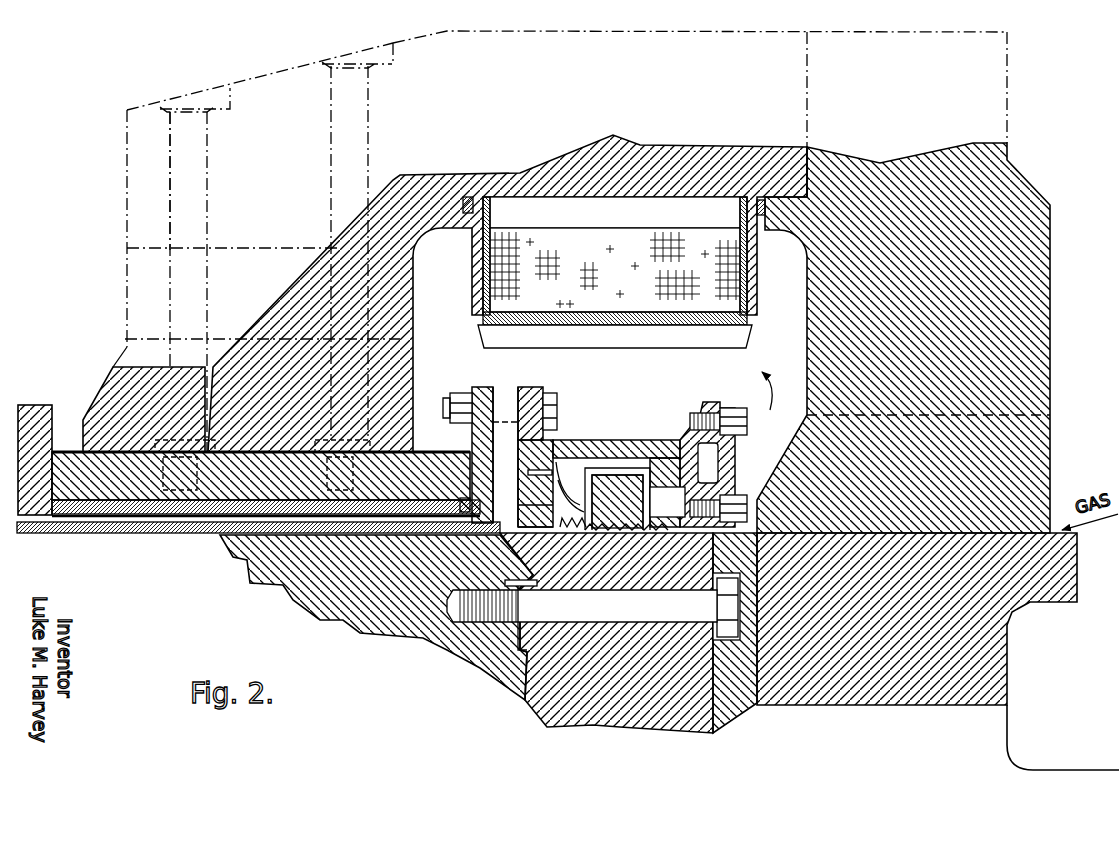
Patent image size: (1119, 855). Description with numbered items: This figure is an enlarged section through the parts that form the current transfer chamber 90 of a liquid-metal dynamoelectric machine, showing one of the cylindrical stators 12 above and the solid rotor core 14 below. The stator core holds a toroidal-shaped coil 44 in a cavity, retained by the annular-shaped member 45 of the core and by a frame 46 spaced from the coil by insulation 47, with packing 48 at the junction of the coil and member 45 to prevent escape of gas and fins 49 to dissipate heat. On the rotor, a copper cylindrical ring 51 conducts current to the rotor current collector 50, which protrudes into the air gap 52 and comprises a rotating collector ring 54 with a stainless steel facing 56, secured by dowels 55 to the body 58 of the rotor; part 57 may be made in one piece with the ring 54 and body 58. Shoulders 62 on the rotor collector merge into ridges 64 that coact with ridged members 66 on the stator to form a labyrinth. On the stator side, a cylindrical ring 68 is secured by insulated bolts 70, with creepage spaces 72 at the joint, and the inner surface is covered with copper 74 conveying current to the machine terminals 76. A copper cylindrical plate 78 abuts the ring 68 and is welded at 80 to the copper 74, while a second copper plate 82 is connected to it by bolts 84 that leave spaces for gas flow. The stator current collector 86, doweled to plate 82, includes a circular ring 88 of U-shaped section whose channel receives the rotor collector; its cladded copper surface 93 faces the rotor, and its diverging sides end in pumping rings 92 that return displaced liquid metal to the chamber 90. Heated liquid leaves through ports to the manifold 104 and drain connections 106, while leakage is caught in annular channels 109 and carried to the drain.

The cylindrical stator 12 is at (94, 188).
The rotor core 14 is at (187, 619).
The toroidal-shaped coil 44 is at (740, 258).
The annular-shaped member 45 is at (572, 162).
The frame 46 is at (757, 281).
The insulation 47 is at (757, 299).
The packing 48 is at (468, 197).
The fins 49 is at (708, 340).
The current collector 50 is at (610, 475).
The copper cylindrical ring 51 is at (290, 555).
The air gap 52 is at (310, 556).
The rotating collector ring 54 is at (634, 570).
The dowels 55 is at (521, 586).
The stainless steel facing 56 is at (655, 612).
The part 57 is at (843, 705).
The body of the rotor 58 is at (450, 642).
The shoulders 62 is at (585, 440).
The ridges 64 is at (535, 523).
The ridged members 66 is at (535, 505).
The cylindrical ring 68 is at (210, 485).
The insulated bolts 70 is at (208, 222).
The creepage spaces 72 is at (153, 445).
The copper 74 is at (130, 510).
The machine terminals 76 is at (32, 405).
The copper cylindrical plate 78 is at (482, 393).
The weld 80 is at (462, 498).
The copper plate 82 is at (507, 470).
The bolts 84 is at (556, 394).
The stator current collector 86 is at (617, 388).
The circular ring 88 is at (680, 440).
The current transfer chamber 90 is at (628, 468).
The pumping rings 92 is at (572, 470).
The cladded copper surface 93 is at (652, 458).
The manifold 104 is at (740, 436).
The drain connections 106 is at (718, 465).
The annular channels 109 is at (688, 500).